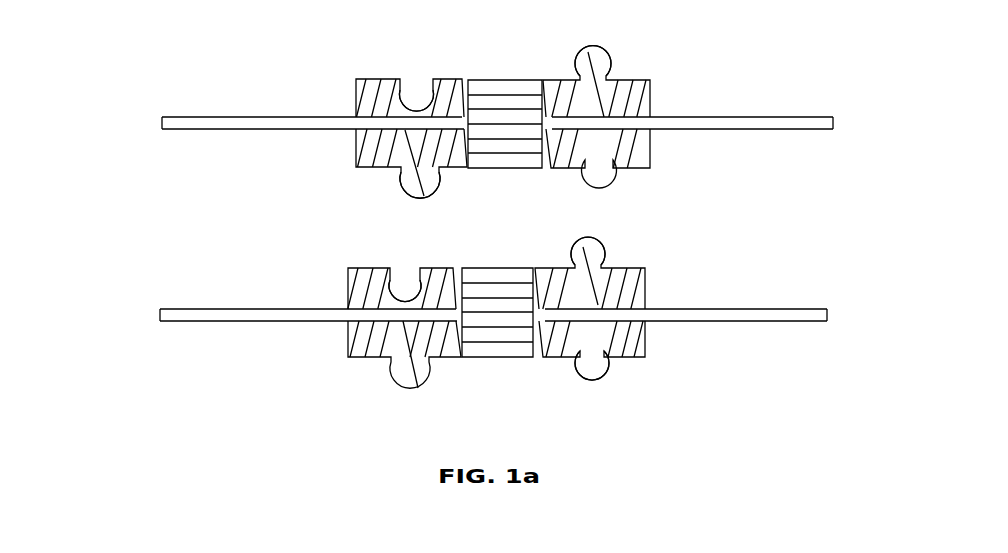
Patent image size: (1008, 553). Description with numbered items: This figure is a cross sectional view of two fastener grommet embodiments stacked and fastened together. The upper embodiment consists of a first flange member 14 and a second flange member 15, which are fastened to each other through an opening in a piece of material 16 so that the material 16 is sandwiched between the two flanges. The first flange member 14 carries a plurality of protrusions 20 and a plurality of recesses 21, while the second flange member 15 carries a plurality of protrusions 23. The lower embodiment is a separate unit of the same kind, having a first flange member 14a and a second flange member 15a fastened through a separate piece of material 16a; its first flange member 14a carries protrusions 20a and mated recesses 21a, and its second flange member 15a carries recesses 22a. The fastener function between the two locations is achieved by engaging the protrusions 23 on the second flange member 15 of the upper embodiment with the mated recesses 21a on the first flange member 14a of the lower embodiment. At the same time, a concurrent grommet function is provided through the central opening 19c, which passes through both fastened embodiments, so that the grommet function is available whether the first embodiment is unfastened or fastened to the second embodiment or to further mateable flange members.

The first flange member 14 is at (700, 100).
The second flange member 15 is at (700, 180).
The piece of material 16 is at (162, 123).
The protrusions 20 is at (593, 63).
The recesses 21 is at (417, 92).
The protrusions 23 is at (410, 188).
The first flange member 14a is at (683, 287).
The second flange member 15a is at (683, 369).
The piece of material 16a is at (160, 315).
The opening 19c is at (503, 381).
The protrusions 20a is at (588, 257).
The recesses 21a is at (412, 288).
The recesses 22a is at (588, 342).